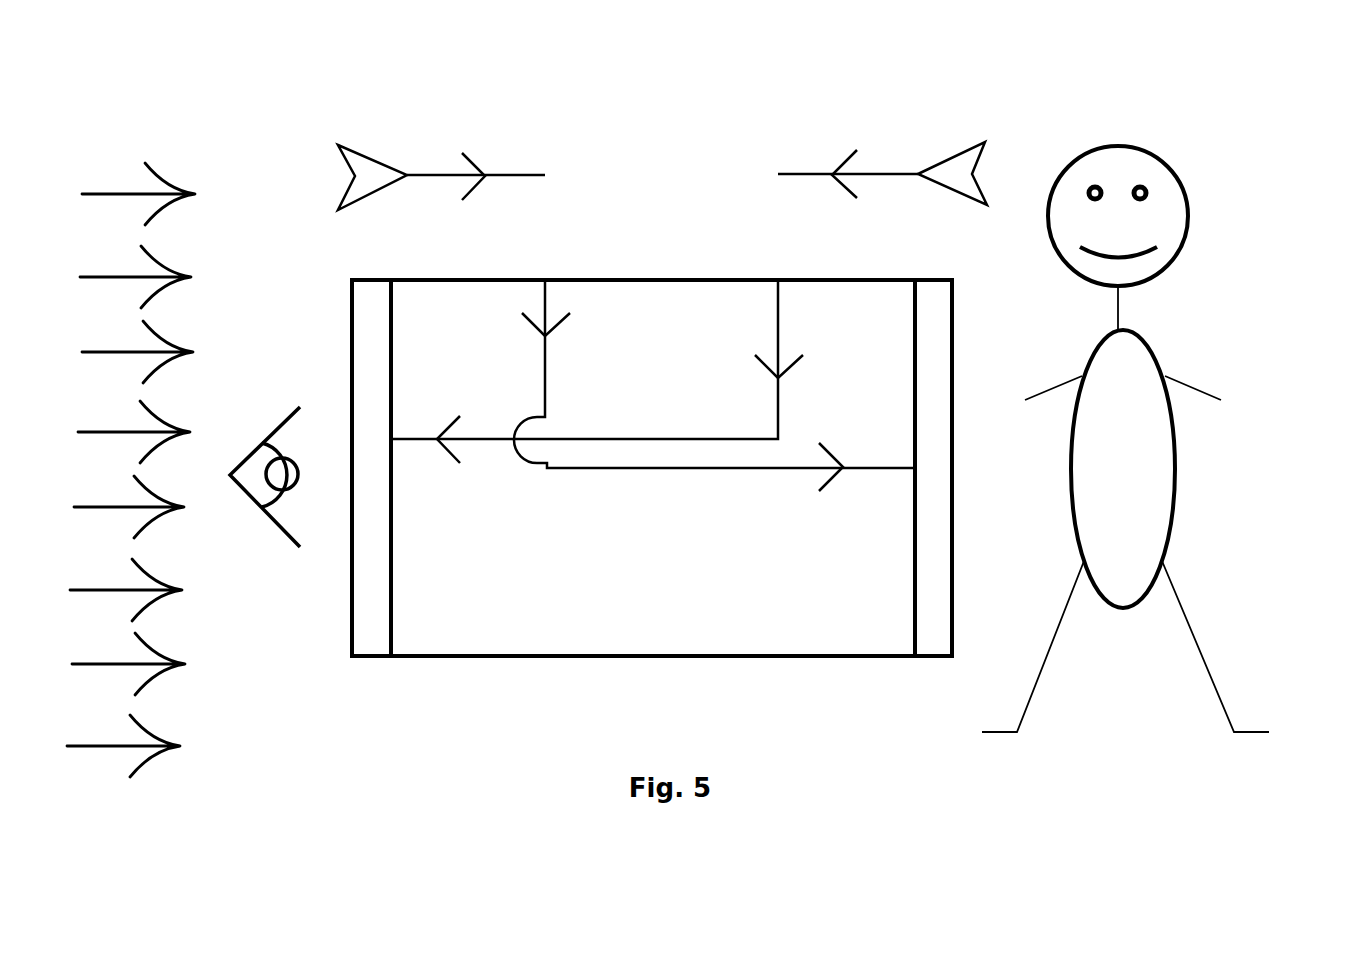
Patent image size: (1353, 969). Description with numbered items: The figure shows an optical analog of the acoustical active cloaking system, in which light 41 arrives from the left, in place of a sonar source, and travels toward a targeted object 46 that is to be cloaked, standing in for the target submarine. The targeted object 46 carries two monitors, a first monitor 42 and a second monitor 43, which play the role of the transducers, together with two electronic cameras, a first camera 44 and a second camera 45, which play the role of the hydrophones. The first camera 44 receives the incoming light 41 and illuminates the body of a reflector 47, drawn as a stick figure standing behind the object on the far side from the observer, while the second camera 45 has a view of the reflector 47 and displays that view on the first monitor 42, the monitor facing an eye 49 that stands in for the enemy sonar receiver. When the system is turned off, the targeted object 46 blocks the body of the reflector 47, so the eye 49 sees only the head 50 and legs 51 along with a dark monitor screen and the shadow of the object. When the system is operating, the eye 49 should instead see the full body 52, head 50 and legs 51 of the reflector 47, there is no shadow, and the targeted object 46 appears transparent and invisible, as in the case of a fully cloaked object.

The light 41 is at (153, 168).
The monitor M1 42 is at (367, 637).
The monitor M2 43 is at (935, 635).
The camera C1 44 is at (362, 160).
The camera C2 45 is at (957, 170).
The targeted object 46 is at (667, 323).
The reflector 47 is at (1275, 502).
The eye 49 is at (251, 474).
The head 50 is at (1152, 226).
The legs 51 is at (1062, 641).
The body 52 is at (1106, 480).